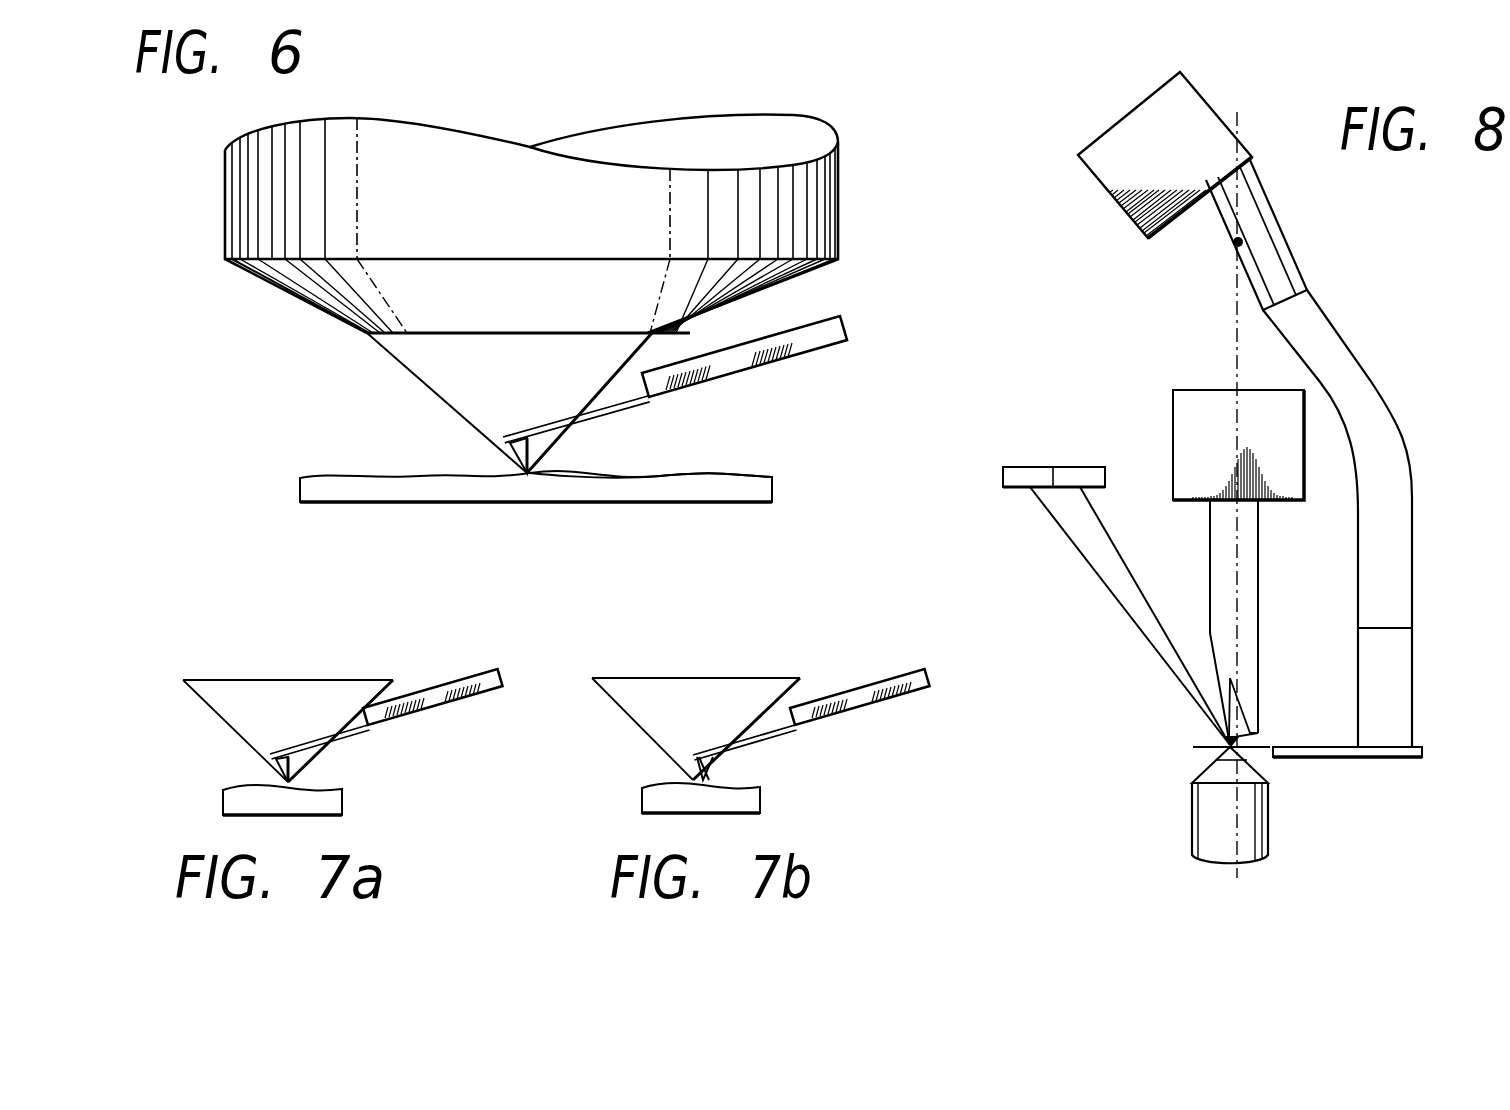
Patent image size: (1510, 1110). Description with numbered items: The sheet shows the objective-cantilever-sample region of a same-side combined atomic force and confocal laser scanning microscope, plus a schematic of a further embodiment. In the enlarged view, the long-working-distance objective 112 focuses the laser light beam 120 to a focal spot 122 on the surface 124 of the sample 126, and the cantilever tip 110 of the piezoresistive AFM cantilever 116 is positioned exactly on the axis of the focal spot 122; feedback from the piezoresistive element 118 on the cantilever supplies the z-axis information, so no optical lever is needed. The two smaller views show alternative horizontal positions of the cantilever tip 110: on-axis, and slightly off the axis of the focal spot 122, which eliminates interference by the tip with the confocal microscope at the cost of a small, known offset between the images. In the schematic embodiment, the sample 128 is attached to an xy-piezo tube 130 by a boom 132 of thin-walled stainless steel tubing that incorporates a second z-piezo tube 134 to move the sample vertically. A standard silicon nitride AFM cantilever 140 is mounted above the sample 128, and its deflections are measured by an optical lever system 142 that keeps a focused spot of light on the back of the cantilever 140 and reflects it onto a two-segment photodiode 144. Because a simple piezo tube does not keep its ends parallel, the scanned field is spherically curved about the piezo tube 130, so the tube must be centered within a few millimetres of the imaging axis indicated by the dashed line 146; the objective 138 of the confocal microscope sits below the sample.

In FIG. 6, the cantilever tip 110 is at (500, 447).
In FIG. 7A, the cantilever tip 110 is at (280, 763).
In FIG. 7B, the cantilever tip 110 is at (713, 773).
In FIG. 6, the objective 112 is at (820, 200).
In FIG. 6, the AFM cantilever 116 is at (807, 358).
In FIG. 7A, the AFM cantilever 116 is at (418, 722).
In FIG. 7B, the AFM cantilever 116 is at (890, 707).
In FIG. 6, the piezoresistive element 118 is at (828, 332).
In FIG. 7A, the piezoresistive element 118 is at (433, 697).
In FIG. 7B, the piezoresistive element 118 is at (863, 693).
In FIG. 6, the laser light beam 120 is at (453, 387).
In FIG. 7A, the laser light beam 120 is at (288, 731).
In FIG. 7B, the laser light beam 120 is at (696, 729).
In FIG. 6, the focal spot 122 is at (547, 470).
In FIG. 7A, the focal spot 122 is at (303, 777).
In FIG. 7B, the focal spot 122 is at (683, 775).
In FIG. 6, the surface 124 is at (725, 470).
In FIG. 6, the sample 126 is at (773, 490).
In FIG. 7A, the sample 126 is at (343, 803).
In FIG. 7B, the sample 126 is at (762, 803).
In FIG. 8, the sample 128 is at (1267, 747).
In FIG. 8, the piezo tube 130 is at (1275, 265).
In FIG. 8, the boom 132 is at (1408, 428).
In FIG. 8, the z-piezo tube 134 is at (1397, 682).
In FIG. 8, the objective lens 138 is at (1247, 827).
In FIG. 8, the AFM cantilever 140 is at (1255, 703).
In FIG. 8, the optical lever system 142 is at (1182, 413).
In FIG. 8, the two-segment photodiode 144 is at (1232, 245).
In FIG. 8, the dashed line 146 is at (1236, 345).